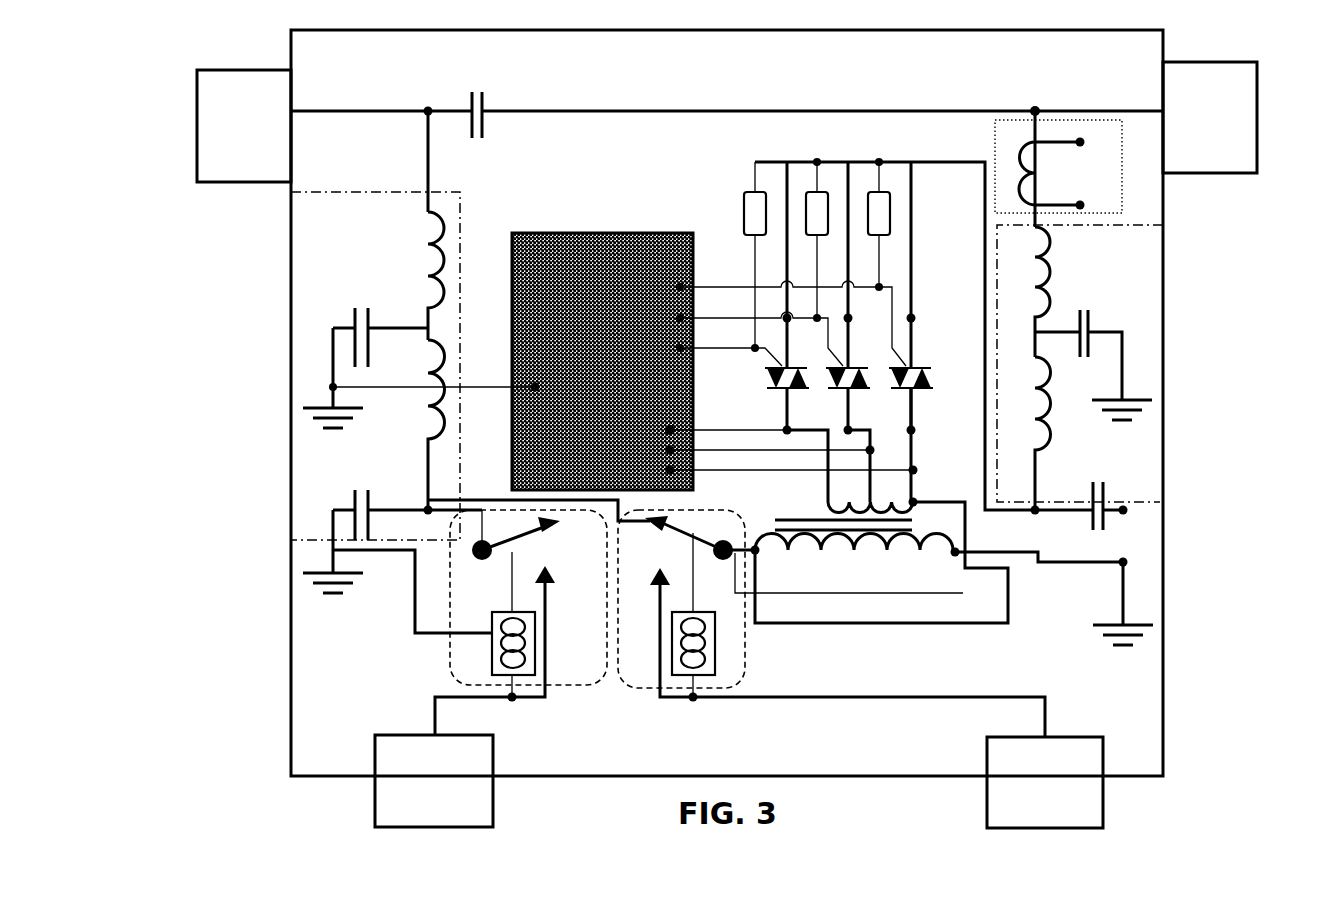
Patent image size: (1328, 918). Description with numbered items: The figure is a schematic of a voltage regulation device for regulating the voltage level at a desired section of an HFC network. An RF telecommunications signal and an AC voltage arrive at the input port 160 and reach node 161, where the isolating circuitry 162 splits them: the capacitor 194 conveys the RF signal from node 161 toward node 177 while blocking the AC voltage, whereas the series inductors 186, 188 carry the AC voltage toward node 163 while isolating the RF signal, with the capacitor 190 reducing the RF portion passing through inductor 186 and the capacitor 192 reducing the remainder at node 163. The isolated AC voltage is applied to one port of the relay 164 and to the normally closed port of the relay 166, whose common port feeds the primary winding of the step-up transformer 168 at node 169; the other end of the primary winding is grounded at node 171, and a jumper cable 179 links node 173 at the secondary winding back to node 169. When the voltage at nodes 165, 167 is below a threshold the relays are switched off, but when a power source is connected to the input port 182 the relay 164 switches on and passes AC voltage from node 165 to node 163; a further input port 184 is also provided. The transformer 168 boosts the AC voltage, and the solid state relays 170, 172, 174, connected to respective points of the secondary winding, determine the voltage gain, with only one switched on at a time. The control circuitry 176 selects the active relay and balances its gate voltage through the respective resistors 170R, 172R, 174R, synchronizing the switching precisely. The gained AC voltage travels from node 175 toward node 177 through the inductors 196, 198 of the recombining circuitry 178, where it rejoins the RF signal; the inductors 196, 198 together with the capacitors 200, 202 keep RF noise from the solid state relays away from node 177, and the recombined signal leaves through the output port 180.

The input port 160 is at (197, 108).
The node 161 is at (425, 146).
The isolating circuitry 162 is at (460, 208).
The node 163 is at (423, 525).
The relay 164 is at (450, 650).
The node 165 is at (518, 712).
The relay 166 is at (745, 630).
The node 167 is at (700, 712).
The step-up transformer 168 is at (885, 548).
The node 169 is at (823, 523).
The solid state relay 170 is at (790, 390).
The resistor 170R is at (744, 218).
The node 171 is at (975, 540).
The solid state relay 172 is at (851, 390).
The resistor 172R is at (808, 195).
The node 173 is at (894, 489).
The solid state relay 174 is at (914, 390).
The resistor 174R is at (888, 195).
The node 175 is at (1035, 525).
The control circuitry 176 is at (603, 233).
The node 177 is at (1056, 154).
The recombining circuitry 178 is at (997, 278).
The jumper cable 179 is at (862, 595).
The output port 180 is at (1257, 152).
The input port 182 is at (375, 790).
The input port 184 is at (987, 790).
The inductor 186 is at (428, 275).
The inductor 188 is at (440, 405).
The capacitor 190 is at (358, 322).
The capacitor 192 is at (358, 505).
The capacitor 194 is at (487, 100).
The inductor 196 is at (1052, 415).
The inductor 198 is at (1052, 298).
The capacitor 200 is at (1093, 535).
The capacitor 202 is at (1092, 325).